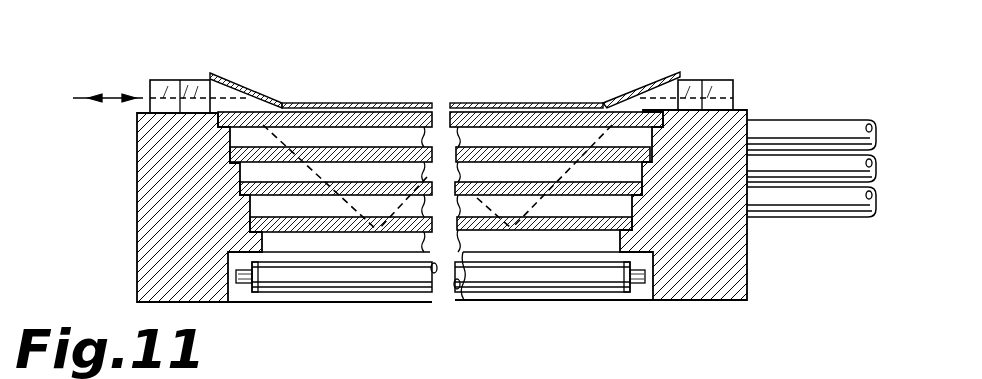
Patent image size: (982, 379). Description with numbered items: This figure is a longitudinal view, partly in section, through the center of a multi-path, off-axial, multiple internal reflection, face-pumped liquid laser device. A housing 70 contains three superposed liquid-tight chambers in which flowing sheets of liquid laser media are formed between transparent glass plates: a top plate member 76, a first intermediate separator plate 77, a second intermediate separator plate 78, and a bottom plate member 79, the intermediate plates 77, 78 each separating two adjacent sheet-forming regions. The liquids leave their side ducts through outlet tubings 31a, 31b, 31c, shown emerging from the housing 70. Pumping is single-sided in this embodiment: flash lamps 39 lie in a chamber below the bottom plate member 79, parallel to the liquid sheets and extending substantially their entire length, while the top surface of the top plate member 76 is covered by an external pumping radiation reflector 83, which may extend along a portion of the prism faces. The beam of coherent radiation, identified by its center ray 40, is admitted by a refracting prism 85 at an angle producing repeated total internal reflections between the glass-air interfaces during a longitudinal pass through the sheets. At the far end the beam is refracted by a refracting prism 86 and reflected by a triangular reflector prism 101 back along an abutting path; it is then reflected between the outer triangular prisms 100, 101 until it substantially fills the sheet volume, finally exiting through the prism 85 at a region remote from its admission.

The triangular reflector prism 100 is at (160, 80).
The refracting prism 85 is at (208, 74).
The external pumping radiation reflector 83 is at (303, 103).
The laser beam center ray 40 is at (112, 98).
The top plate member 76 is at (490, 112).
The first intermediate separator plate 77 is at (533, 147).
The second intermediate separator plate 78 is at (550, 182).
The bottom plate member 79 is at (588, 217).
The refracting prism 86 is at (700, 80).
The triangular reflector prism 101 is at (722, 80).
The housing 70 is at (753, 240).
The outlet tubing 31a is at (797, 120).
The outlet tubing 31b is at (842, 153).
The outlet tubing 31c is at (830, 218).
The flash lamp 39 is at (593, 292).